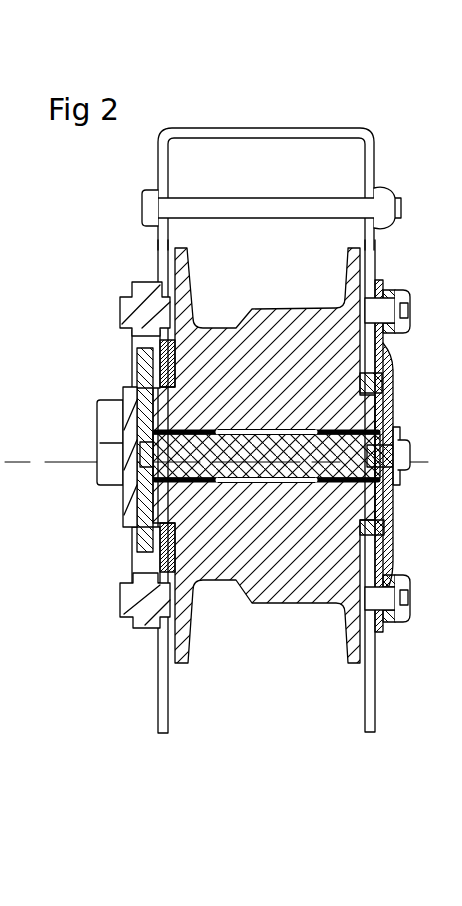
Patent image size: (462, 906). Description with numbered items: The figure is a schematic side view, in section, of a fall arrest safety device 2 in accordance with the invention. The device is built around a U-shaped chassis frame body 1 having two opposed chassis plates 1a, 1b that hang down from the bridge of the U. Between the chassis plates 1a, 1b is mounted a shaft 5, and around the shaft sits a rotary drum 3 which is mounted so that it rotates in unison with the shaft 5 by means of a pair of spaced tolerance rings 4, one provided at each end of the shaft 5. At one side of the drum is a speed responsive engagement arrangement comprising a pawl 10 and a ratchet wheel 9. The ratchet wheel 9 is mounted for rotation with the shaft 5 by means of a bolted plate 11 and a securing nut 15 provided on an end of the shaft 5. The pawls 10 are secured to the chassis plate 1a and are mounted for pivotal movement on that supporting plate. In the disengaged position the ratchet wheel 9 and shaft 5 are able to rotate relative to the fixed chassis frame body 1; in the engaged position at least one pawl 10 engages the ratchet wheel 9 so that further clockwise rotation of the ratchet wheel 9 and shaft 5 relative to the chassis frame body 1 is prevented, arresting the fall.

The chassis frame body 1 is at (356, 128).
The chassis plate 1a is at (157, 258).
The chassis plate 1b is at (373, 250).
The fall arrest safety device 2 is at (264, 106).
The rotary drum 3 is at (277, 322).
The tolerance rings 4 is at (195, 428).
The shaft 5 is at (258, 450).
The ratchet wheel 9 is at (147, 395).
The pawl 10 is at (130, 310).
The bolted plate 11 is at (128, 394).
The securing nut 15 is at (118, 470).